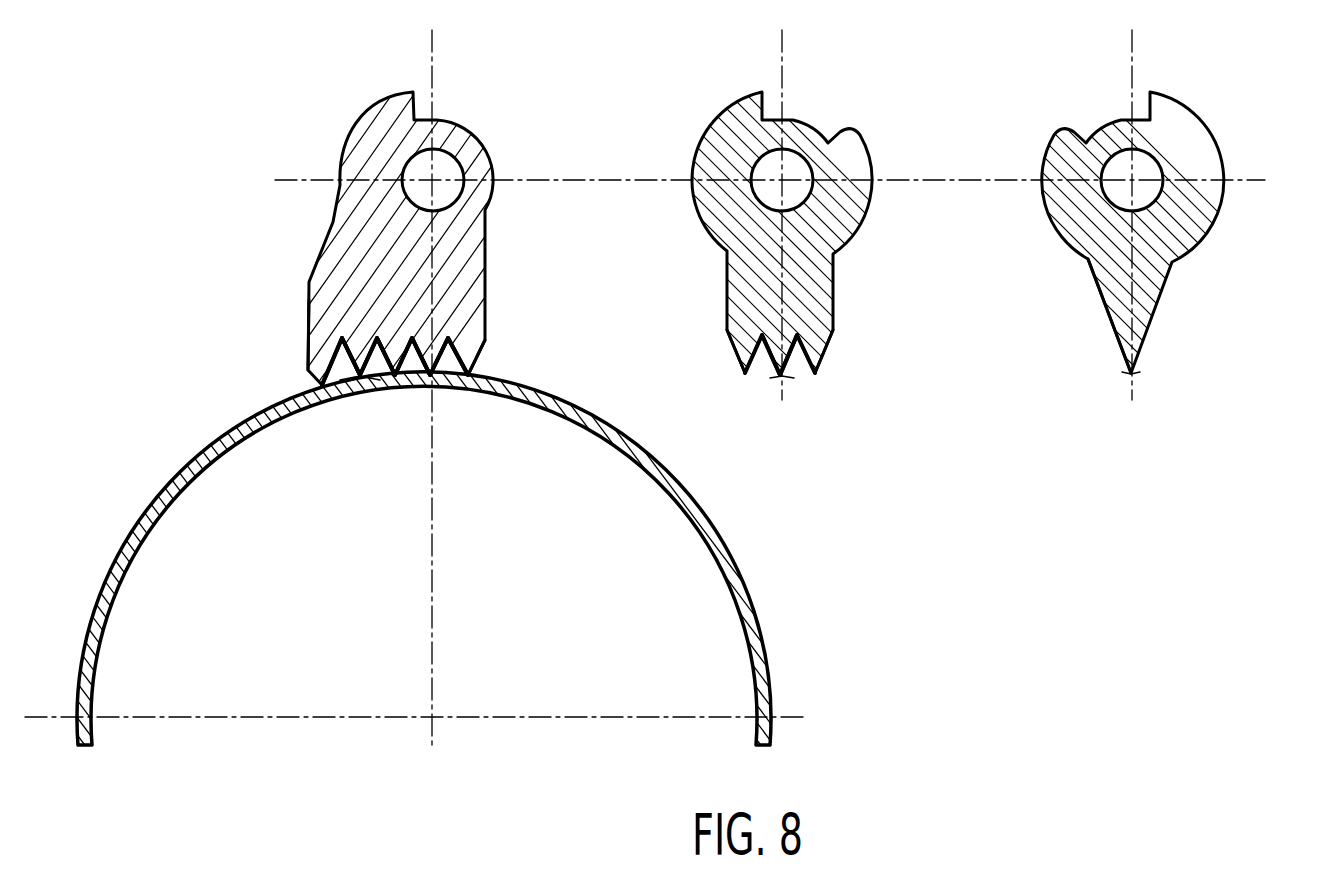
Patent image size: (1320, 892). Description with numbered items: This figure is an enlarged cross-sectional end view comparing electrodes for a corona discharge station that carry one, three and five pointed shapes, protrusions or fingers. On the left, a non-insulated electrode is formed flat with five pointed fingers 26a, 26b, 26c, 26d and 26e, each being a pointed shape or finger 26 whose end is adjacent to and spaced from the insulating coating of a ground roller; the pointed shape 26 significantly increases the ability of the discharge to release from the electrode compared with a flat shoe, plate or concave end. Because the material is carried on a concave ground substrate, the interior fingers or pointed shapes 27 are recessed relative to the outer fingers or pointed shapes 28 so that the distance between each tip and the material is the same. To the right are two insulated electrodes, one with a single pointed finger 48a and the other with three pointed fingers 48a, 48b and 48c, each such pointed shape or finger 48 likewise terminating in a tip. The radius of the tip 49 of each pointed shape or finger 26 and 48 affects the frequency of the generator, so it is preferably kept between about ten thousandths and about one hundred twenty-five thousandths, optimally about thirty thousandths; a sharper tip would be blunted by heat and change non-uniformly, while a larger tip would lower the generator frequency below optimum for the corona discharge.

The pointed shape or finger 26 is at (488, 228).
The finger 26a is at (326, 360).
The finger 26b is at (358, 374).
The finger 26c is at (394, 372).
The finger 26d is at (432, 372).
The finger 26e is at (481, 350).
The interior fingers or pointed shapes 27 is at (447, 396).
The outer fingers or pointed shapes 28 is at (322, 387).
The tip of the pointed shape or finger 49 is at (356, 392).
The pointed shape or finger 48 is at (858, 152).
The pointed finger 48a is at (738, 350).
The pointed finger 48b is at (790, 372).
The pointed finger 48c is at (822, 345).